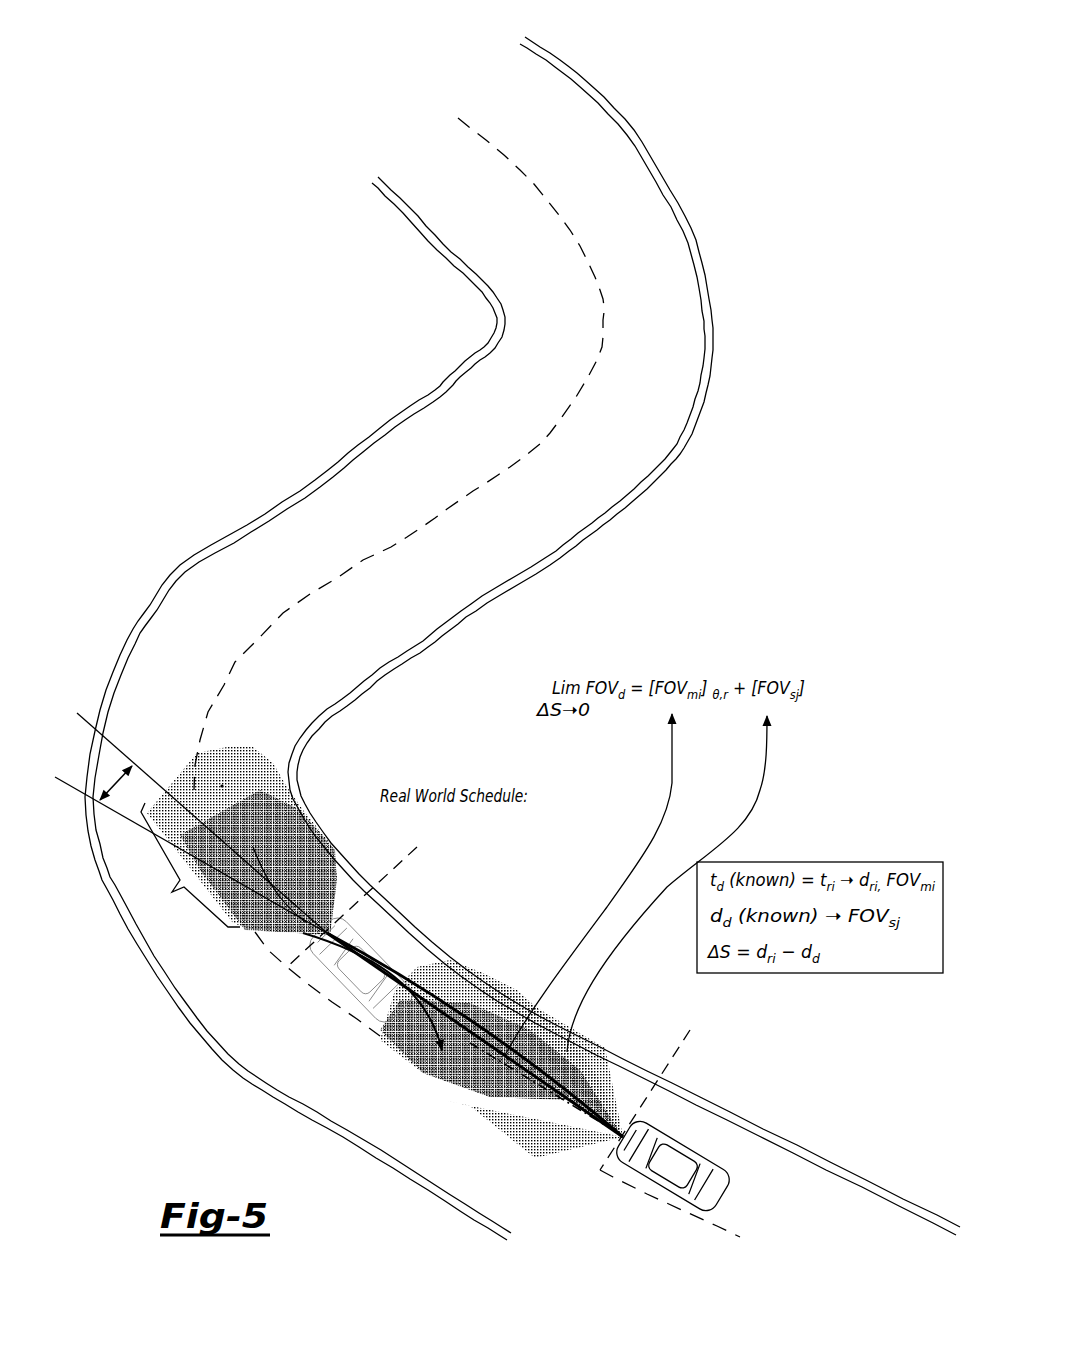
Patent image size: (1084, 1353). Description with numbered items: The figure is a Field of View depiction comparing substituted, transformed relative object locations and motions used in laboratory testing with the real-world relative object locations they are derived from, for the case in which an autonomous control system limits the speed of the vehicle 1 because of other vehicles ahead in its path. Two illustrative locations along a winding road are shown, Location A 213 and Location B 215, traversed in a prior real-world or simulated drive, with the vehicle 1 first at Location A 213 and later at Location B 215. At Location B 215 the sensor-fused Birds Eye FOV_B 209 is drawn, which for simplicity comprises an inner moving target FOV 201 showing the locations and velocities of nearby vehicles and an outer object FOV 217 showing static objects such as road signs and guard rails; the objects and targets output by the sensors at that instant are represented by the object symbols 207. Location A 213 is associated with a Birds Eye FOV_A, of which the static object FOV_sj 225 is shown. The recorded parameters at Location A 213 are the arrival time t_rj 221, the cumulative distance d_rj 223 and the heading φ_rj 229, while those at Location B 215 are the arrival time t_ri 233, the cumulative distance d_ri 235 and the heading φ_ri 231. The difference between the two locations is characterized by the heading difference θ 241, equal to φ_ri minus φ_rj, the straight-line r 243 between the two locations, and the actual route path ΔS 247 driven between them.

The vehicle 1 is at (705, 1185).
The inner moving target FOV 201 is at (243, 750).
The object symbols 207 is at (222, 786).
The Birds Eye FOV_B 209 is at (190, 865).
The Location A 213 is at (562, 1207).
The Location B 215 is at (198, 991).
The outer object FOV 217 is at (323, 886).
The time t_rj 221 is at (703, 1065).
The cumulative distance d_rj 223 is at (725, 1037).
The static object FOV_sj 225 is at (605, 1052).
The heading φ_rj 229 is at (56, 838).
The heading φ_ri 231 is at (80, 666).
The time t_ri 233 is at (433, 877).
The cumulative distance d_ri 235 is at (462, 855).
The heading difference θ 241 is at (112, 766).
The straight-line r 243 is at (500, 1027).
The actual route path ΔS 247 is at (456, 1052).